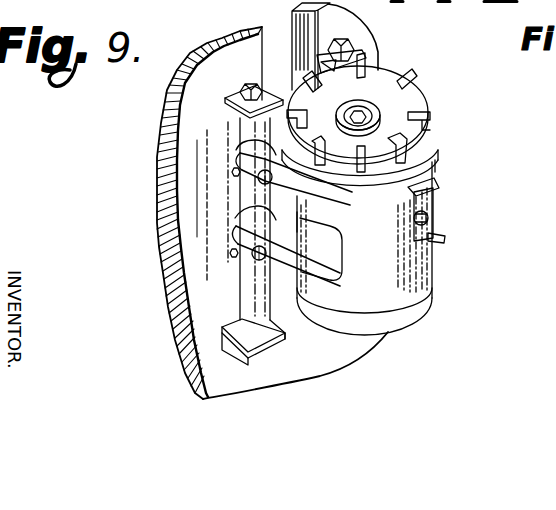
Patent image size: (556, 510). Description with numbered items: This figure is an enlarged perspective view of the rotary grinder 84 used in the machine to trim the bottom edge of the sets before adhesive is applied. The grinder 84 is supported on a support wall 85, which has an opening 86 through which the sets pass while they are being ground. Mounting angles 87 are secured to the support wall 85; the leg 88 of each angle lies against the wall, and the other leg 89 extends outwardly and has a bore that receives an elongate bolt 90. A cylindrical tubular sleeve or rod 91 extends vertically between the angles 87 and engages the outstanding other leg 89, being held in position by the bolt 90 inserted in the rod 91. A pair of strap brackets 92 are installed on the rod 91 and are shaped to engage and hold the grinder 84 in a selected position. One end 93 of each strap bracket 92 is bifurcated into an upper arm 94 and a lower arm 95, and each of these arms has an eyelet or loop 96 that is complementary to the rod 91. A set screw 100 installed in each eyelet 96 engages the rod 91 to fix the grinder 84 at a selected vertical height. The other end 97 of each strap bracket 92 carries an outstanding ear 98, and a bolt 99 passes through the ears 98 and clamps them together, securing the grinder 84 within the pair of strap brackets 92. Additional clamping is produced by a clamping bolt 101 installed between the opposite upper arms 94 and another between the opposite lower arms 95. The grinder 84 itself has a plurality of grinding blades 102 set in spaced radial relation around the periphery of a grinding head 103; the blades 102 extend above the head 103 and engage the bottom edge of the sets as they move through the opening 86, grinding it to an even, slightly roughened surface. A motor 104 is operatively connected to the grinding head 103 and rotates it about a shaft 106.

The rotary grinder 84 is at (427, 282).
The support wall 85 is at (213, 50).
The opening 86 is at (289, 28).
The mounting angle 87 is at (228, 322).
The base angle bracket leg 88 is at (230, 353).
The other leg 89 is at (285, 332).
The elongate bolt 90 is at (254, 84).
The cylindrical tubular sleeve or rod 91 is at (246, 116).
The strap bracket 92 is at (440, 237).
The one end 93 is at (247, 142).
The upper arm 94 is at (300, 108).
The lower arm 95 is at (239, 259).
The eyelet or loop 96 is at (270, 216).
The other end 97 is at (443, 225).
The outstanding ear 98 is at (442, 200).
The bolt 99 is at (413, 216).
The set screw 100 is at (233, 172).
The clamping bolt 101 is at (287, 230).
The grinding blade 102 is at (430, 125).
The grinding head 103 is at (413, 100).
The motor 104 is at (385, 333).
The shaft 106 is at (358, 110).